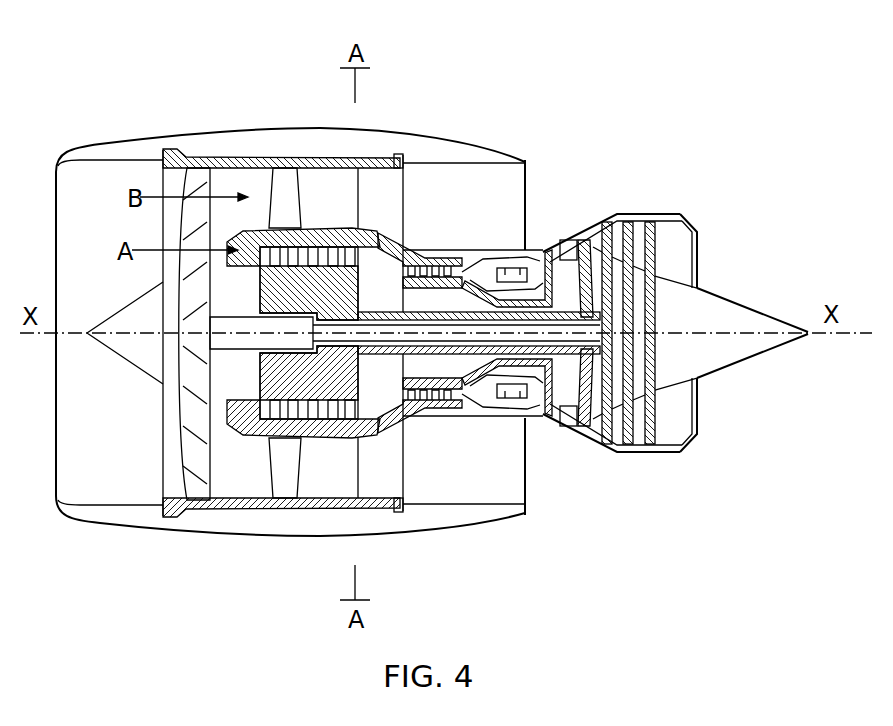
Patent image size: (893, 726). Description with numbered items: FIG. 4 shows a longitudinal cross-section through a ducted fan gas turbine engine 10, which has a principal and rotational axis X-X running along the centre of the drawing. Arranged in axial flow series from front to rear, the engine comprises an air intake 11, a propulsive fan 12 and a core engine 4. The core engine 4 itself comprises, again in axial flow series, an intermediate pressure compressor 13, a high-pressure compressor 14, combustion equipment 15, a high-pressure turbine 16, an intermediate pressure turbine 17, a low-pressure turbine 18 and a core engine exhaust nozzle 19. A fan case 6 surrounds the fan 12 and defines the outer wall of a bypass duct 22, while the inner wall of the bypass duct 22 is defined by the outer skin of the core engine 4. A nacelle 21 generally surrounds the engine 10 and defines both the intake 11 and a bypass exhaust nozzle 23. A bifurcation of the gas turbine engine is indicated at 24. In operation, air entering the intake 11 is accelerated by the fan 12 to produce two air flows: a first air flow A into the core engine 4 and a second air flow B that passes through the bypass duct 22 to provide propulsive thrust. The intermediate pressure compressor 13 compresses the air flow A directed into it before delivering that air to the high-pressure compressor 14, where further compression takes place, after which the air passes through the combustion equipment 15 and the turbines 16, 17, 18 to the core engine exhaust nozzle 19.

The ducted fan gas turbine engine 10 is at (100, 92).
The air intake 11 is at (107, 162).
The propulsive fan 12 is at (182, 458).
The intermediate pressure compressor 13 is at (330, 438).
The high-pressure compressor 14 is at (447, 267).
The combustion equipment 15 is at (472, 417).
The high-pressure turbine 16 is at (523, 420).
The intermediate pressure turbine 17 is at (582, 243).
The low-pressure turbine 18 is at (593, 437).
The core engine exhaust nozzle 19 is at (692, 230).
The nacelle 21 is at (280, 140).
The bypass duct 22 is at (500, 199).
The bypass exhaust nozzle 23 is at (527, 158).
The bifurcation 24 is at (348, 188).
The core engine 4 is at (342, 220).
The fan case 6 is at (355, 162).